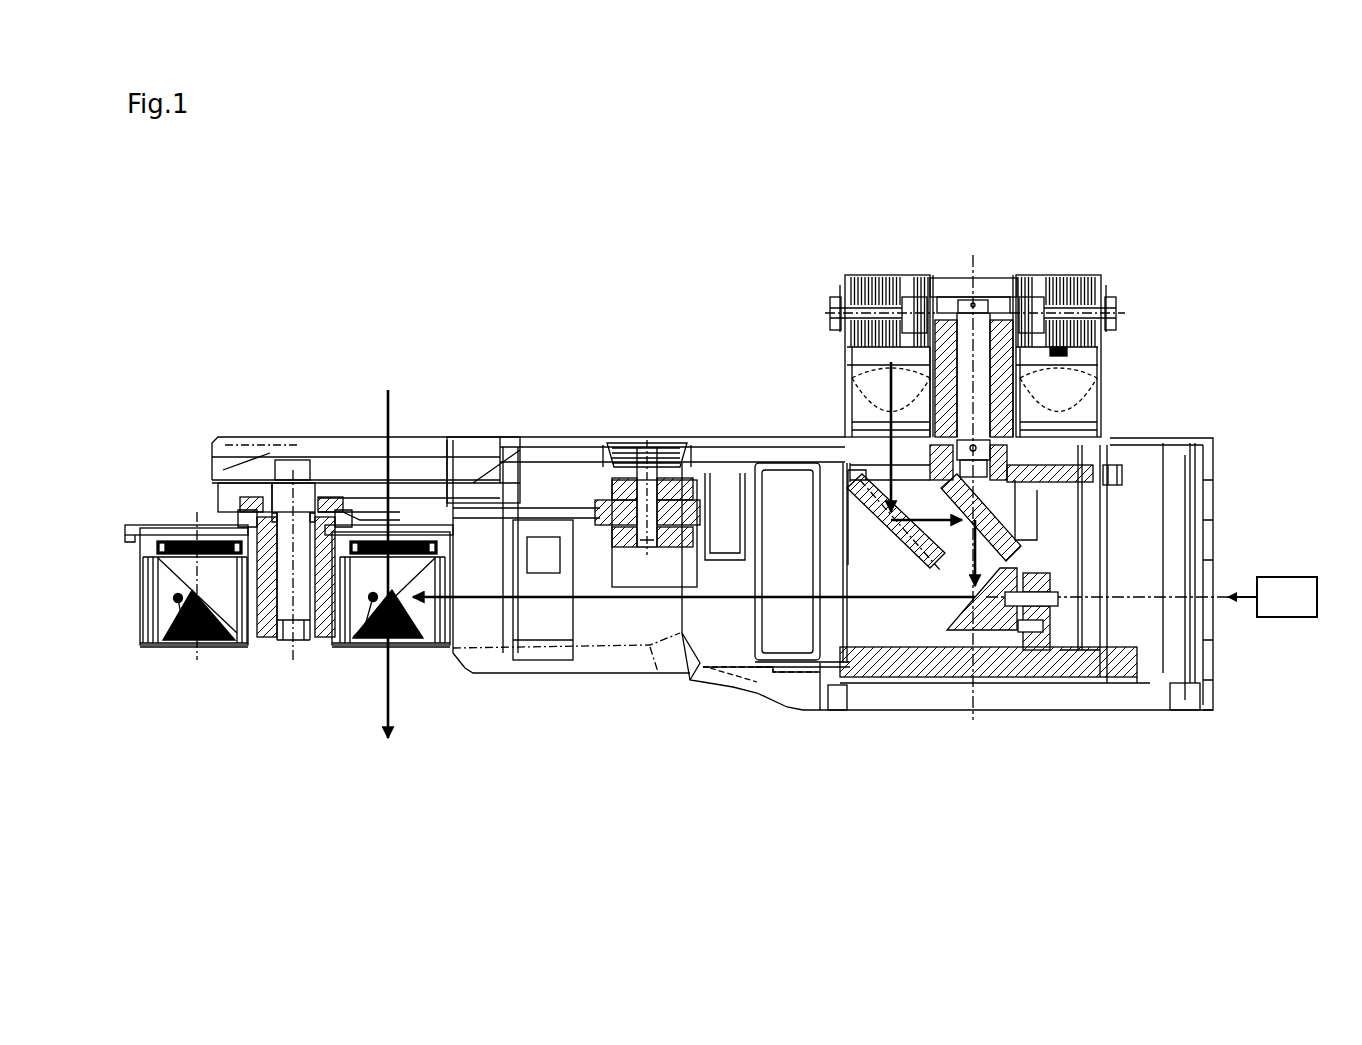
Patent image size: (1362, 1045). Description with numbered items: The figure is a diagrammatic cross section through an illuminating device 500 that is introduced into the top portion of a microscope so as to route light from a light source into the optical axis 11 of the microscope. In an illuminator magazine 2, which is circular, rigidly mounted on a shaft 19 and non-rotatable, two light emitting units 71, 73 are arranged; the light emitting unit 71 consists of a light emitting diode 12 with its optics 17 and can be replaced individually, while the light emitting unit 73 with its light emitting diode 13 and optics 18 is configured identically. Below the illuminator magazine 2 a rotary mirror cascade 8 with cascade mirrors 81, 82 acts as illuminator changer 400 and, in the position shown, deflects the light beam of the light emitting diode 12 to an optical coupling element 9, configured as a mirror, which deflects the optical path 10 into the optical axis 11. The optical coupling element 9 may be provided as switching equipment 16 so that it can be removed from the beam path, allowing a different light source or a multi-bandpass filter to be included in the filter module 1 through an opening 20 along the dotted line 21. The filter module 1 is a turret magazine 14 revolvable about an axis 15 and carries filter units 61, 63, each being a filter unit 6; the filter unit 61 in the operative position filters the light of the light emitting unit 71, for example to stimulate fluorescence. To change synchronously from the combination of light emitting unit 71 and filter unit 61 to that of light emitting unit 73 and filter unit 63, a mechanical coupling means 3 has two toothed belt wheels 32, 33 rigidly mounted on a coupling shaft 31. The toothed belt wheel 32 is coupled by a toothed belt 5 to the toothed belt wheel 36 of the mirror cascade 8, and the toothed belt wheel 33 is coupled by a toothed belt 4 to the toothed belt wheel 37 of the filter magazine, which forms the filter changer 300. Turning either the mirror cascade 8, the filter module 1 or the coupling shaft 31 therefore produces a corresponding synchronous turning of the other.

The filter module 1 is at (208, 498).
The illuminator magazine 2 is at (1045, 399).
The mechanical coupling means 3 is at (624, 424).
The toothed belt 4 is at (497, 513).
The toothed belt 5 is at (780, 445).
The filter unit 6 is at (177, 648).
The rotary mirror cascade 8 is at (959, 645).
The optical coupling element 9 is at (970, 680).
The optical path 10 is at (587, 600).
The optical axis 11 is at (397, 710).
The light emitting diode 12 is at (883, 350).
The light emitting diode 13 is at (1087, 357).
The turret magazine 14 is at (185, 609).
The axis 15 is at (287, 497).
The switching equipment 16 is at (1043, 577).
The optics 17 is at (862, 392).
The optics 18 is at (1083, 398).
The shaft 19 is at (970, 328).
The opening 20 is at (1208, 583).
The dotted line 21 is at (1182, 592).
The coupling shaft 31 is at (657, 463).
The toothed belt wheel 32 is at (612, 460).
The toothed belt wheel 33 is at (680, 520).
The toothed belt wheel 36 is at (996, 472).
The toothed belt wheel 37 is at (328, 503).
The filter unit 61 is at (367, 648).
The filter unit 63 is at (187, 648).
The light emitting unit 71 is at (865, 280).
The light emitting unit 73 is at (1094, 280).
The cascade mirror 81 is at (917, 662).
The cascade mirror 82 is at (995, 678).
The filter changer 300 is at (248, 500).
The illuminator changer 400 is at (875, 520).
The illuminating device 500 is at (392, 262).